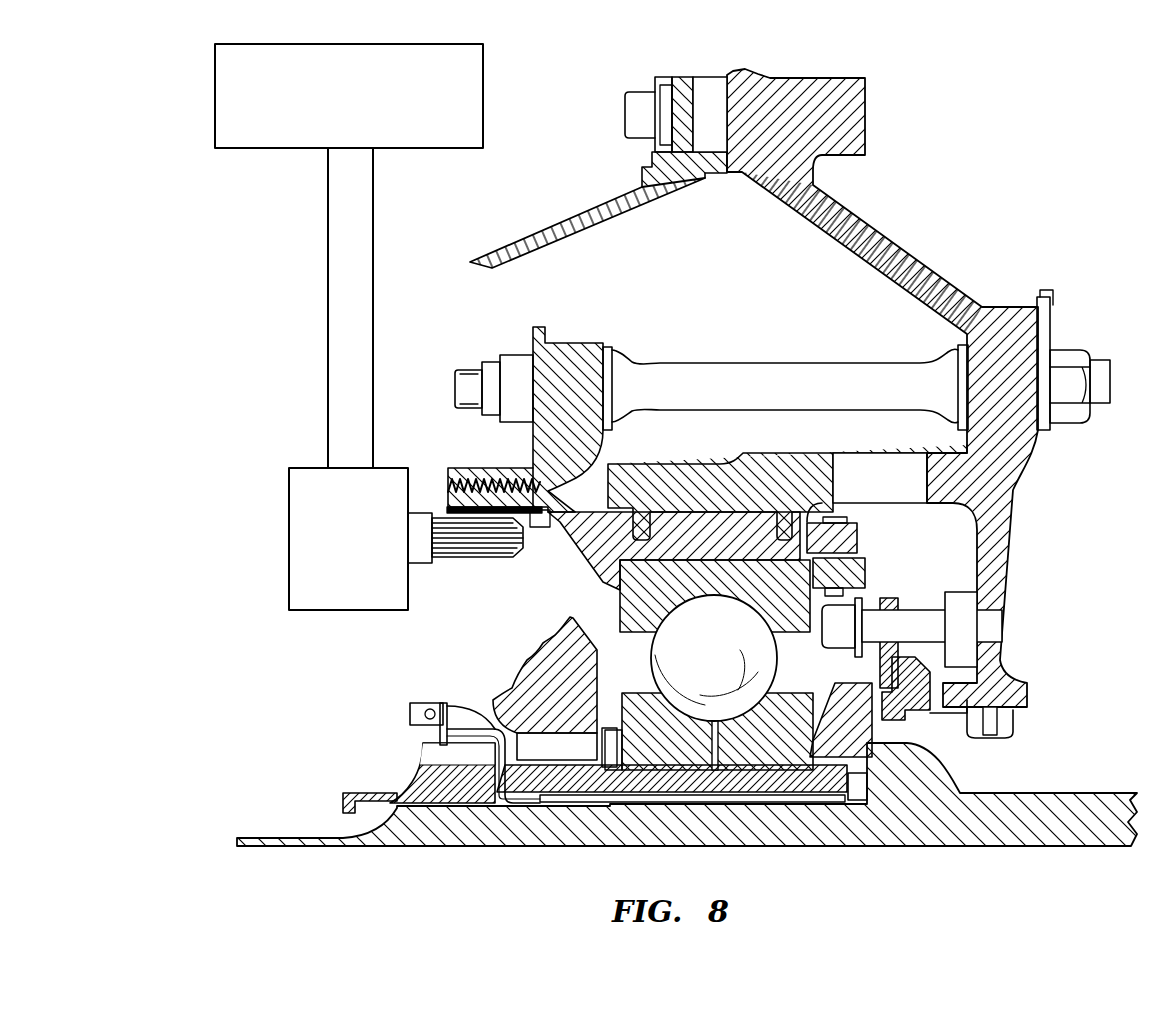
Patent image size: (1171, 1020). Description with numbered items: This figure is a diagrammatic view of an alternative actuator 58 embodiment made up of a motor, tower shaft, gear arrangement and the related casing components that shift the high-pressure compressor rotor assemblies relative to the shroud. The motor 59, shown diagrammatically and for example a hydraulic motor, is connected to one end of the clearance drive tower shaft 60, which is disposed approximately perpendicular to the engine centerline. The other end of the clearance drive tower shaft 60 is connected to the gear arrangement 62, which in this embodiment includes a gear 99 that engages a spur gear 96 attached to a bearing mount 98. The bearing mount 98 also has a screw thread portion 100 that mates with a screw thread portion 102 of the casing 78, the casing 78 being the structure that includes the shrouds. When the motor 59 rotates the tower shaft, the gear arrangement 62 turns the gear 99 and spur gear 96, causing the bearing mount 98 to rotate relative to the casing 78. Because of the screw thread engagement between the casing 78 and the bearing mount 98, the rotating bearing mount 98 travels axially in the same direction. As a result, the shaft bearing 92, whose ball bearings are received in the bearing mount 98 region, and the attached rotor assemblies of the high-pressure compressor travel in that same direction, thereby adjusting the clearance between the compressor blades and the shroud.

The actuator 58 is at (305, 376).
The motor 59 is at (356, 104).
The clearance drive tower shaft 60 is at (336, 297).
The gear arrangement 62 is at (366, 557).
The casing 78 is at (586, 453).
The shaft bearing 92 is at (768, 770).
The spur gear 96 is at (545, 528).
The bearing mount 98 is at (600, 540).
The gear 99 is at (450, 562).
The screw thread portion 100 is at (447, 497).
The screw thread portion 102 is at (473, 479).